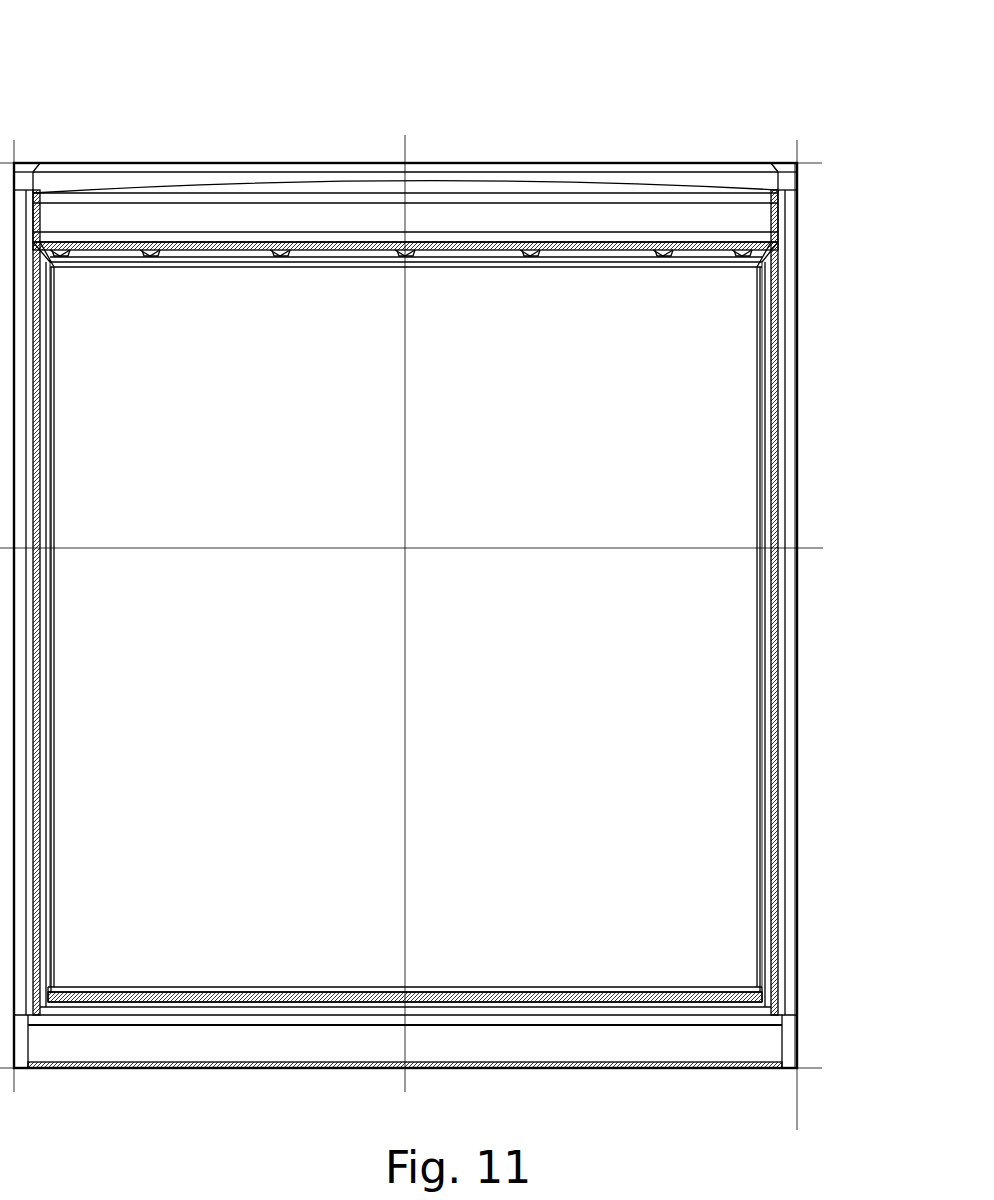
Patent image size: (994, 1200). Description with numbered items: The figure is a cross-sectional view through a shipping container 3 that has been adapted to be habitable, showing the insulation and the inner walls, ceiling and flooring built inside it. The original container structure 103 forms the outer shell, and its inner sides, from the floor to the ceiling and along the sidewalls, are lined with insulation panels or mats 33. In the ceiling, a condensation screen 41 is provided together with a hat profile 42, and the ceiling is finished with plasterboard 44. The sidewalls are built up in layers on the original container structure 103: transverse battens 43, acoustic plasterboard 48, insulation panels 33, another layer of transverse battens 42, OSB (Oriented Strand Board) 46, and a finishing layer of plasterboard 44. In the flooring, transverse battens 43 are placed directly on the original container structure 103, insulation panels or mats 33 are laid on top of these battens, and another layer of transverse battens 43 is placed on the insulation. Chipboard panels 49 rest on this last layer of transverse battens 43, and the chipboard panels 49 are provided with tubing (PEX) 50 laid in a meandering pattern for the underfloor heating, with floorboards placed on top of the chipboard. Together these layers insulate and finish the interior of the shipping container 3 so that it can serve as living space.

The shipping container 3 is at (115, 85).
The original container structure 103 is at (241, 172).
The condensation screen 41 is at (475, 180).
The insulation panels or mats 33 is at (615, 249).
The hat profile 42 is at (648, 255).
The plasterboard 44 is at (724, 264).
The transverse battens 43 is at (782, 586).
The acoustic plasterboard 48 is at (776, 612).
The OSB (Oriented Strand Board) 46 is at (763, 682).
The tubing (PEX) 50 is at (499, 997).
The chipboard panels 49 is at (522, 998).